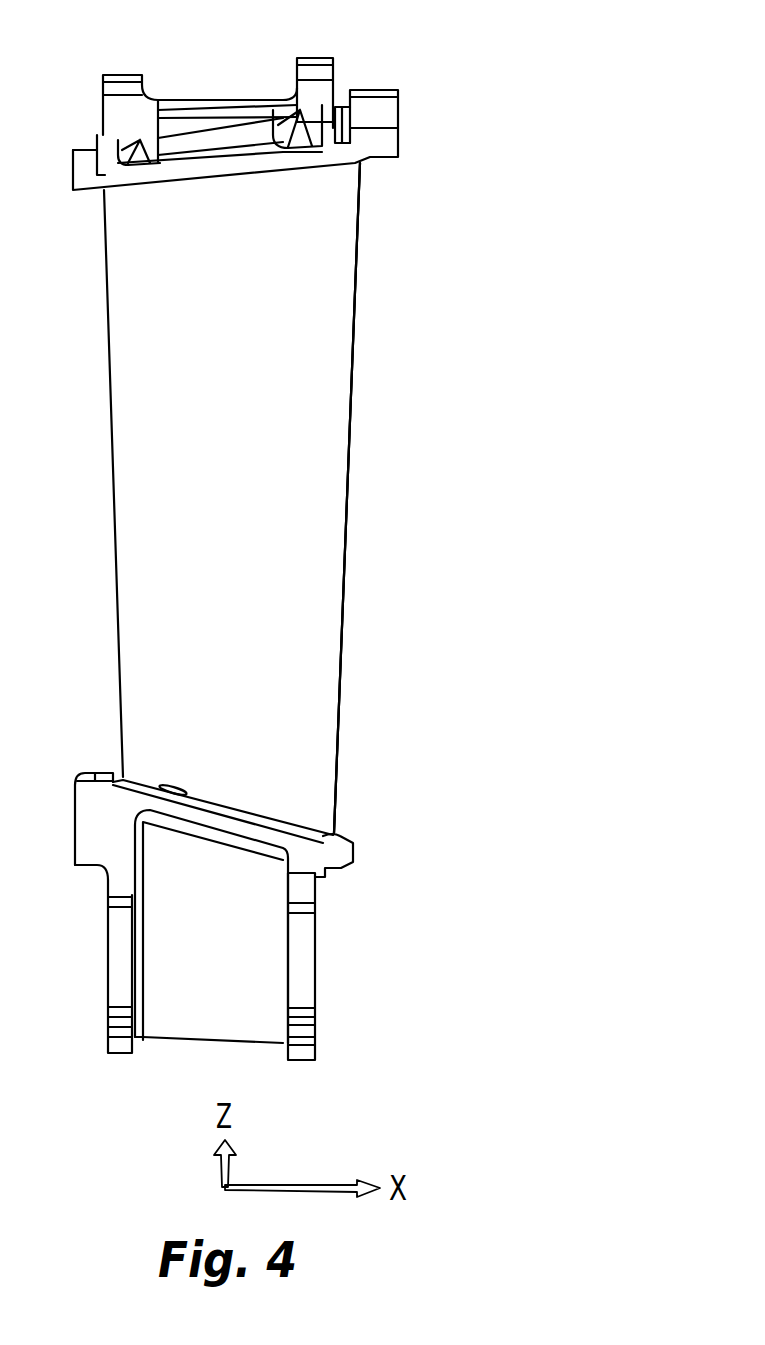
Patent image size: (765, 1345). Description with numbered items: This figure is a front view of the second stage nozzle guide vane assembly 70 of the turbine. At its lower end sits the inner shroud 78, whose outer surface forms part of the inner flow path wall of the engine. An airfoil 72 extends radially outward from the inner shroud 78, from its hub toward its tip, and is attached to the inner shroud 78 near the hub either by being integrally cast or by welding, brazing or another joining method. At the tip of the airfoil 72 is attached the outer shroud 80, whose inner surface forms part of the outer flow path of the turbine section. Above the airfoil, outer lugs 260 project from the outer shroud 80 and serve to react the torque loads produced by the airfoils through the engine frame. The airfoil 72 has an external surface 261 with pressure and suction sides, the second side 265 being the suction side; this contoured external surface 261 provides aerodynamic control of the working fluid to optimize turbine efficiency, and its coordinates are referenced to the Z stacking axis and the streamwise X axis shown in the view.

The second stage nozzle guide vane assembly 70 is at (335, 530).
The airfoil 72 is at (246, 557).
The inner shroud 78 is at (355, 867).
The outer shroud 80 is at (383, 112).
The outer lug 260 is at (116, 78).
The external surface 261 is at (400, 577).
The second side 265 is at (315, 705).